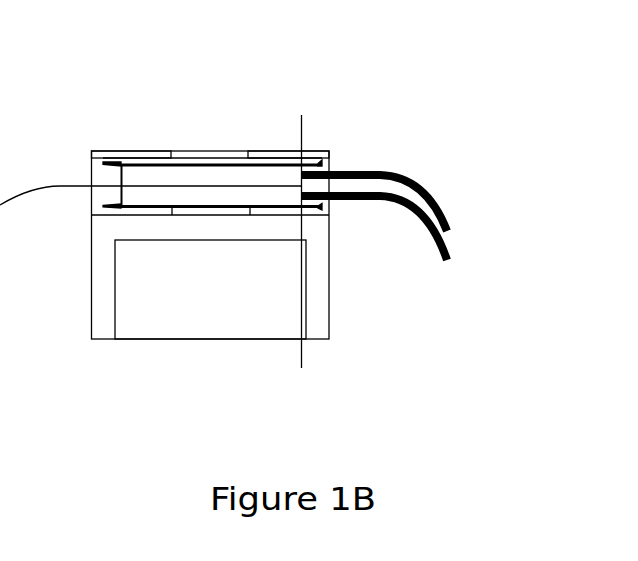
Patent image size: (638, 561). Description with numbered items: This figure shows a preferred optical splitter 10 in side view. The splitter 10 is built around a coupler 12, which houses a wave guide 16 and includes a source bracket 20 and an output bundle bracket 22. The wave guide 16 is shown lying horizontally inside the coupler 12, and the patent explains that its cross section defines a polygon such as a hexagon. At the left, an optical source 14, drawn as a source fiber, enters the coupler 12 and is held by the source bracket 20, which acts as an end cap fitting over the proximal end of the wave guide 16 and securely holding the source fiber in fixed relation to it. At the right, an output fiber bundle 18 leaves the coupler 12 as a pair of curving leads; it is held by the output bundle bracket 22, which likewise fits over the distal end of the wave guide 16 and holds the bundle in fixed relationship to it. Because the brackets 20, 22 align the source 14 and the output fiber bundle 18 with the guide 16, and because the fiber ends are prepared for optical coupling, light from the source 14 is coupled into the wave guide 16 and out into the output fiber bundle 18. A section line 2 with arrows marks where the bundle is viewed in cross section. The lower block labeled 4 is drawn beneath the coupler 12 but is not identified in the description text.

The optical splitter 10 is at (262, 88).
The coupler 12 is at (90, 253).
The optical source 14 is at (35, 183).
The wave guide 16 is at (205, 207).
The output fiber bundle 18 is at (400, 172).
The source bracket 20 is at (135, 150).
The output bundle bracket 22 is at (268, 150).
The base 4 is at (137, 341).
The section line 2 is at (362, 115).